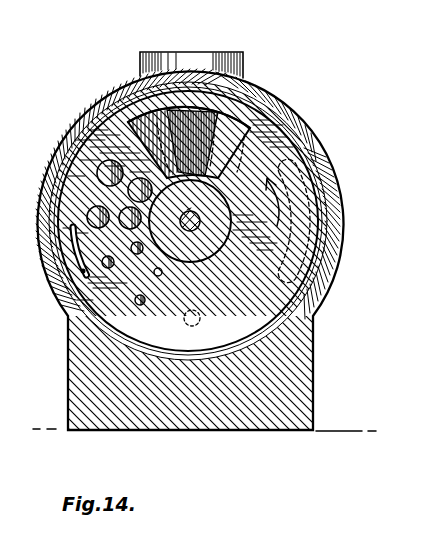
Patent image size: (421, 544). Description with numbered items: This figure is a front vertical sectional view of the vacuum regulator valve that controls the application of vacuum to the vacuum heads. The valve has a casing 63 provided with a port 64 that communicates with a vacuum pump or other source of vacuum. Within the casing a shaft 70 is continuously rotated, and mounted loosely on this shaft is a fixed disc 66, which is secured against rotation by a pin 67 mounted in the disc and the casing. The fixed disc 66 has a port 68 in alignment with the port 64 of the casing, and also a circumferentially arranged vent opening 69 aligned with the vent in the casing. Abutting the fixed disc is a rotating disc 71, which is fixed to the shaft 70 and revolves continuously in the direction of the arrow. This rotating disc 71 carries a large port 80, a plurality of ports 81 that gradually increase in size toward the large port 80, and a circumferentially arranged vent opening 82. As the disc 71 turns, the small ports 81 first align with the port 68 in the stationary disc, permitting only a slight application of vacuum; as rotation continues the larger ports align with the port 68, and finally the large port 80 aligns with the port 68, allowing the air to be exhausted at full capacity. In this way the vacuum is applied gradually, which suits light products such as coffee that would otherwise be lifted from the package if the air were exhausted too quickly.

The casing 63 is at (316, 135).
The port 64 is at (186, 52).
The fixed disc 66 is at (250, 128).
The pin 67 is at (200, 313).
The port 68 is at (233, 124).
The vent opening 69 is at (300, 246).
The shaft 70 is at (196, 218).
The rotating disc 71 is at (188, 221).
The large port 80 is at (130, 137).
The ports 81 is at (119, 215).
The vent opening 82 is at (85, 272).